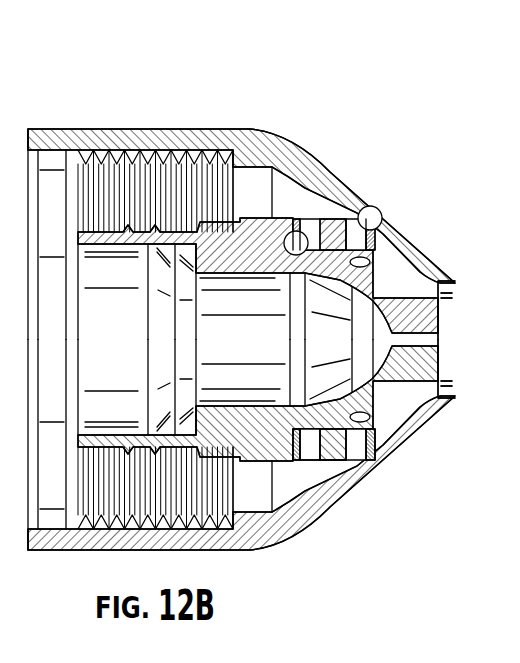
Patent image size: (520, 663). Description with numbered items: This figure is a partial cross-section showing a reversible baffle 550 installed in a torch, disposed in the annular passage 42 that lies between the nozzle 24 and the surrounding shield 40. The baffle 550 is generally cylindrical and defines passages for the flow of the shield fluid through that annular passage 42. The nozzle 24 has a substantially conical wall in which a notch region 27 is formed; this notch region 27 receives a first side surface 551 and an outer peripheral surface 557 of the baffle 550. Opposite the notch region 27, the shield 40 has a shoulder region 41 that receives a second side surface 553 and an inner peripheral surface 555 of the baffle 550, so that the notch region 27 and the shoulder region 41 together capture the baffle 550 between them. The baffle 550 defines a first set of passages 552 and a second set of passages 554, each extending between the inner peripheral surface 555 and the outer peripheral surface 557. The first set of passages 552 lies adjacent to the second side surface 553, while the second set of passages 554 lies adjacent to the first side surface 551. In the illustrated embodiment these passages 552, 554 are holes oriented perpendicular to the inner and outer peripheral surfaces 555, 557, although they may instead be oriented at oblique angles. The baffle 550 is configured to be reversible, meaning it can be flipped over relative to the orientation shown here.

The nozzle 24 is at (430, 314).
The notch region 27 is at (287, 248).
The shield 40 is at (437, 264).
The shoulder region 41 is at (382, 217).
The annular passage 42 is at (248, 185).
The reversible baffle 550 is at (330, 218).
The first side surface 551 is at (377, 436).
The first set of passages 552 is at (317, 460).
The second side surface 553 is at (291, 437).
The second set of passages 554 is at (352, 230).
The inner peripheral surface 555 is at (333, 430).
The outer peripheral surface 557 is at (340, 455).